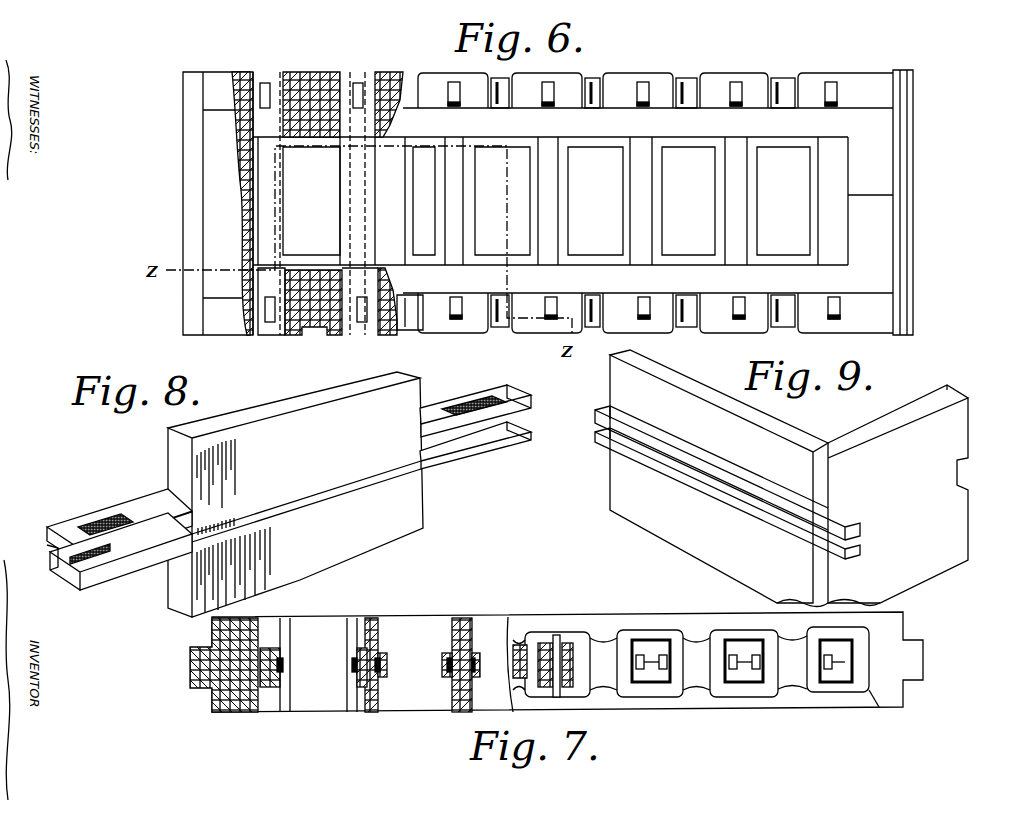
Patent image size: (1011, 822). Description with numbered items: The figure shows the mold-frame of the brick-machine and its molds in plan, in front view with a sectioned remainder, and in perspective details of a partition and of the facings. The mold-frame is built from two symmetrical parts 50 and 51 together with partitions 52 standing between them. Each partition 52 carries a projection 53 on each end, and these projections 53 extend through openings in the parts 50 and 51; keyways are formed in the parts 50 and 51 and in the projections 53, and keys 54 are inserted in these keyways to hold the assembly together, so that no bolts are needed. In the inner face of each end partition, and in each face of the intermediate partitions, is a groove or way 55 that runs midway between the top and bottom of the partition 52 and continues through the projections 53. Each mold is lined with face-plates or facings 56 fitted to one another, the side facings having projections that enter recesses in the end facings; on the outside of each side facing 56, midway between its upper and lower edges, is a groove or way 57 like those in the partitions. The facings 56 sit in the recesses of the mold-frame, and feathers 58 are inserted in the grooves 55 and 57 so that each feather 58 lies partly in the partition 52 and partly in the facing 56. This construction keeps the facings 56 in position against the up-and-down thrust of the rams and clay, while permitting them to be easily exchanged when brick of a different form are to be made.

In FIG. 6, the part of the mold-frame 50 is at (320, 318).
In FIG. 7, the part of the mold-frame 50 is at (605, 624).
In FIG. 6, the part of the mold-frame 51 is at (311, 80).
In FIG. 6, the partition 52 is at (357, 232).
In FIG. 8, the partition 52 is at (295, 494).
In FIG. 7, the partition 52 is at (368, 620).
In FIG. 6, the projection 53 is at (267, 328).
In FIG. 8, the projection 53 is at (289, 487).
In FIG. 7, the projection 53 is at (538, 632).
In FIG. 6, the key 54 is at (638, 90).
In FIG. 7, the key 54 is at (556, 634).
In FIG. 8, the groove or way 55 is at (326, 490).
In FIG. 6, the face-plate or facing 56 is at (283, 167).
In FIG. 9, the face-plate or facing 56 is at (789, 478).
In FIG. 7, the face-plate or facing 56 is at (444, 655).
In FIG. 9, the groove or way 57 is at (765, 515).
In FIG. 6, the feather 58 is at (283, 328).
In FIG. 7, the feather 58 is at (445, 665).